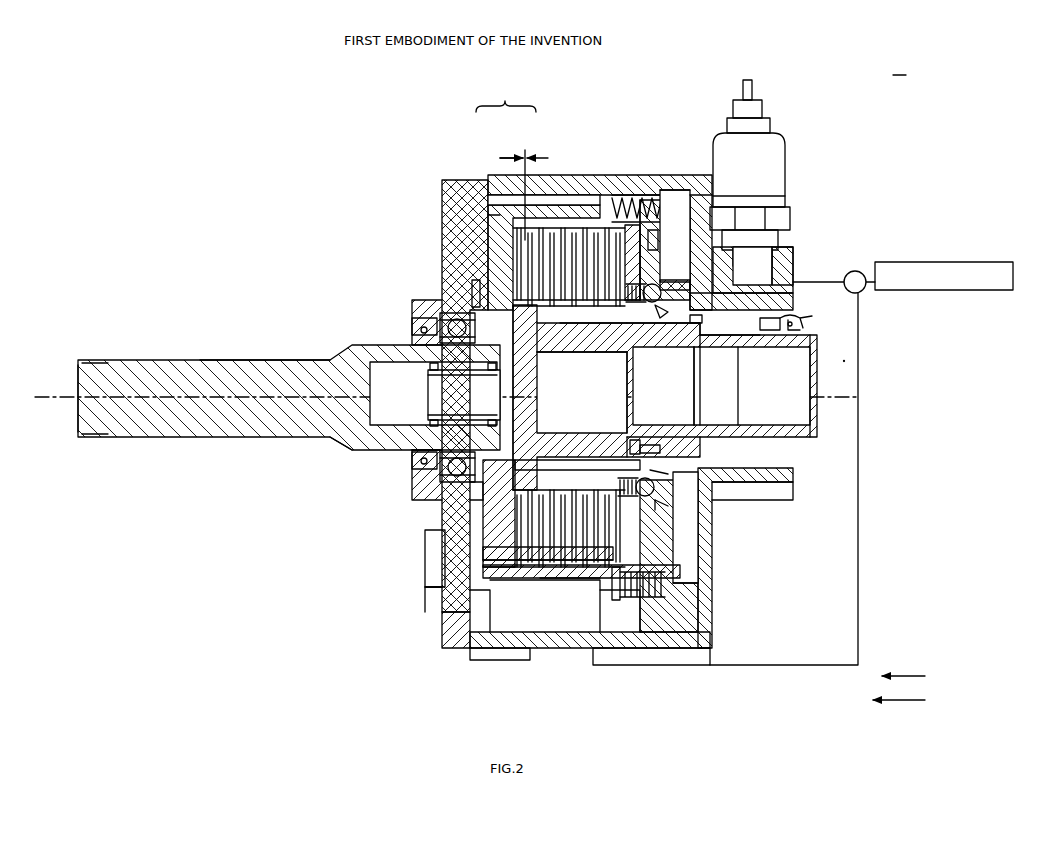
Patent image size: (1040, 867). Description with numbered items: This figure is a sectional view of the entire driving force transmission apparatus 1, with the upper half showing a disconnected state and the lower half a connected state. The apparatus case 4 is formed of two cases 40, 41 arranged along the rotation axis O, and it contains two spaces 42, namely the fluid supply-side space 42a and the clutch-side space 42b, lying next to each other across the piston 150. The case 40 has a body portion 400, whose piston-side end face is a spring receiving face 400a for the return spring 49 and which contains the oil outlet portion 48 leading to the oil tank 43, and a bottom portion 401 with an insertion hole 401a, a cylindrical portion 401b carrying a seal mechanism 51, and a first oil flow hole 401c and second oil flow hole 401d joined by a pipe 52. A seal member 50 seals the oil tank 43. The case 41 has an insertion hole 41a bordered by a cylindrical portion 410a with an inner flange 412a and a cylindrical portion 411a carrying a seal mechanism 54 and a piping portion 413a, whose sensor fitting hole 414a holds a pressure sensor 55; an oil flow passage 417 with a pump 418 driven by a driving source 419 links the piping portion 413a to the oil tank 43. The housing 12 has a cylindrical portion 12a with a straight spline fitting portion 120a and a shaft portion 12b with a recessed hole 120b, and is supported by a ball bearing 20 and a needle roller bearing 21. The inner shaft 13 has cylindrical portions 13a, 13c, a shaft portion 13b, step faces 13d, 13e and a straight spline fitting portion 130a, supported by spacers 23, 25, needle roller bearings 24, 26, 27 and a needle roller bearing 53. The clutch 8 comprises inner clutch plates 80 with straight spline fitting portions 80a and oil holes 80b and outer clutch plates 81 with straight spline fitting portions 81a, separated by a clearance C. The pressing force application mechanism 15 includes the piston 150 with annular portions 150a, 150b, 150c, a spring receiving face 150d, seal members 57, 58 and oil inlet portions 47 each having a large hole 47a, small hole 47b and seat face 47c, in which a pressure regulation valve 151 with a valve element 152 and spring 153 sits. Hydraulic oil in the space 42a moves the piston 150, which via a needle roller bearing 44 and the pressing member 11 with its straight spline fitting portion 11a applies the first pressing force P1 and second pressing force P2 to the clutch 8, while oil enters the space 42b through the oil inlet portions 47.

The driving force transmission apparatus 1 is at (867, 110).
The apparatus case 4 is at (506, 99).
The case 40 is at (455, 176).
The case 41 is at (578, 176).
The insertion hole 41a is at (748, 482).
The body portion 400 is at (490, 637).
The spring receiving face 400a is at (612, 592).
The bottom portion 401 is at (459, 192).
The insertion hole 401a is at (440, 316).
The cylindrical portion 401b is at (412, 470).
The first oil flow hole 401c is at (425, 545).
The second oil flow hole 401d is at (452, 592).
The clutch 8 is at (486, 230).
The pressing member 11 is at (650, 196).
The straight spline fitting portion 11a is at (637, 190).
The housing 12 is at (297, 340).
The cylindrical portion 12a is at (506, 262).
The shaft portion 12b is at (213, 366).
The straight spline fitting portion 120a is at (526, 555).
The recessed hole 120b is at (352, 444).
The inner shaft 13 is at (824, 412).
The cylindrical portion 13a is at (578, 438).
The shaft portion 13b is at (440, 401).
The cylindrical portion 13c is at (813, 338).
The step face 13d is at (538, 348).
The step face 13e is at (627, 369).
The straight spline fitting portion 130a is at (578, 325).
The pressing force application mechanism 15 is at (742, 262).
The ball bearing 20 is at (450, 474).
The needle roller bearing 21 is at (474, 288).
The spacer 23 is at (466, 508).
The needle roller bearing 24 is at (478, 489).
The spacer 25 is at (652, 449).
The needle roller bearing 26 is at (638, 436).
The needle roller bearing 27 is at (438, 330).
The return spring 42 is at (658, 196).
The space 42a is at (662, 580).
The space 42b is at (643, 585).
The oil tank 43 is at (500, 594).
The needle roller bearing 44 is at (657, 250).
The oil inlet portion 47 is at (678, 498).
The large hole 47a is at (672, 512).
The small hole 47b is at (680, 504).
The seat face 47c is at (674, 488).
The oil outlet portion 48 is at (553, 582).
The return spring 49 is at (657, 195).
The seal member 50 is at (633, 192).
The seal mechanism 51 is at (414, 458).
The pipe 52 is at (428, 589).
The needle roller bearing 53 is at (700, 332).
The seal mechanism 54 is at (808, 318).
The pressure sensor 55 is at (778, 158).
The seal member 57 is at (692, 218).
The seal member 58 is at (690, 327).
The inner clutch plates 80 is at (510, 523).
The straight spline fitting portion 80a is at (588, 456).
The oil holes 80b is at (490, 542).
The outer clutch plates 81 is at (476, 568).
The straight spline fitting portion 81a is at (552, 560).
The piston 150 is at (683, 565).
The annular portion 150a is at (704, 228).
The annular portion 150b is at (624, 455).
The annular portion 150c is at (712, 140).
The spring receiving face 150d is at (668, 582).
The pressure regulation valve 151 is at (734, 310).
The valve element 152 is at (690, 290).
The spring 153 is at (688, 270).
The cylindrical portion 410a is at (683, 333).
The cylindrical portion 411a is at (708, 312).
The inner flange 412a is at (659, 352).
The piping portion 413a is at (778, 280).
The sensor fitting hole 414a is at (797, 256).
The oil flow passage 417 is at (800, 666).
The pump 418 is at (863, 271).
The driving source 419 is at (972, 262).
The clearance C is at (524, 190).
The rotation axis O is at (830, 386).
The first pressing force P1 is at (903, 666).
The second pressing force P2 is at (899, 711).